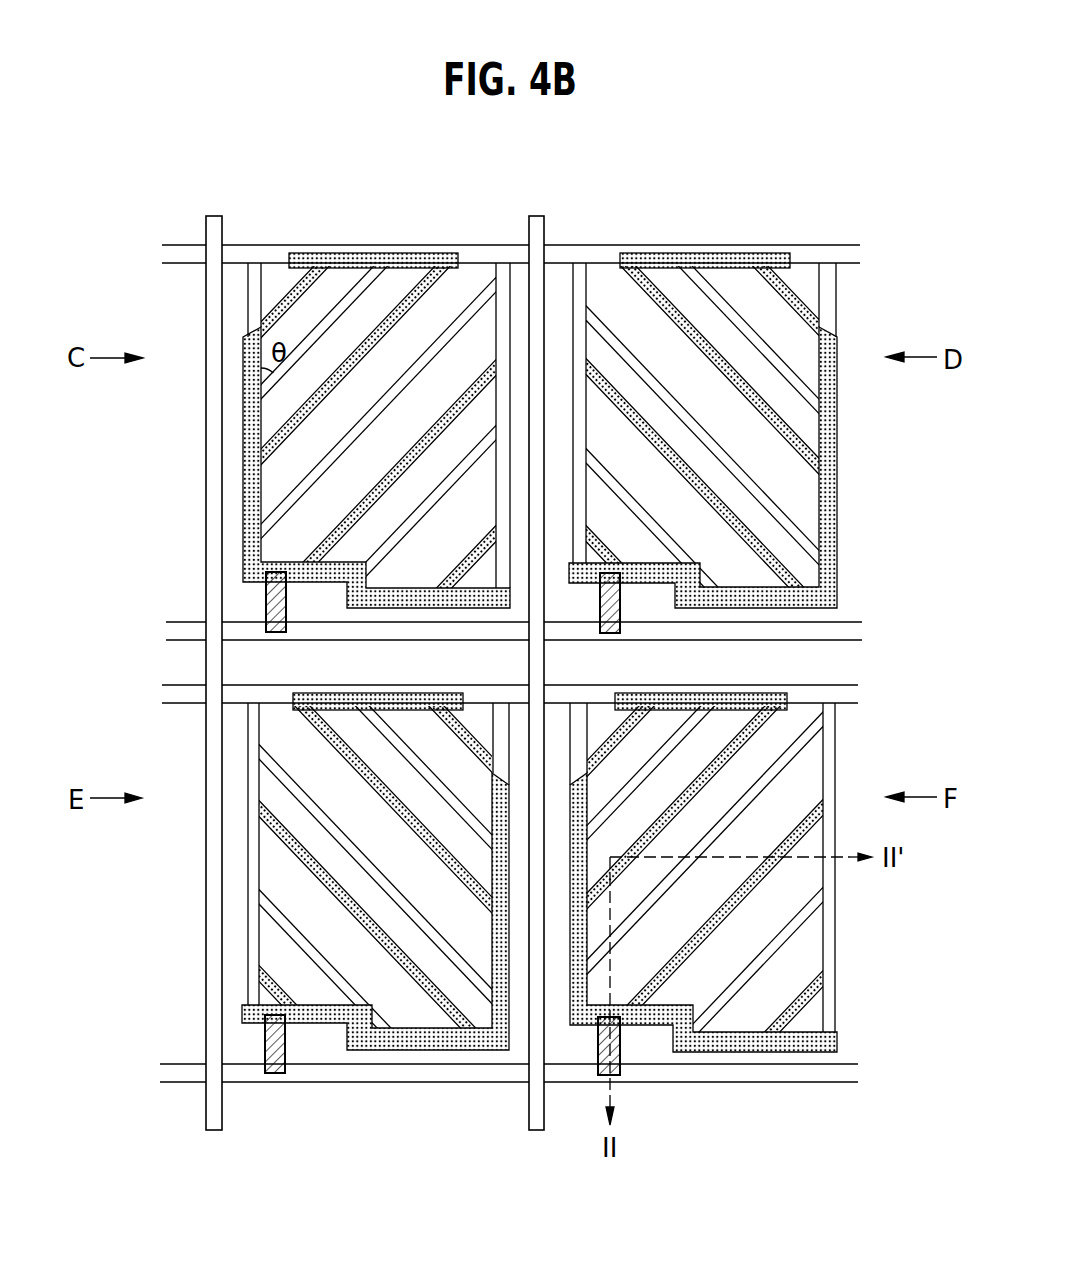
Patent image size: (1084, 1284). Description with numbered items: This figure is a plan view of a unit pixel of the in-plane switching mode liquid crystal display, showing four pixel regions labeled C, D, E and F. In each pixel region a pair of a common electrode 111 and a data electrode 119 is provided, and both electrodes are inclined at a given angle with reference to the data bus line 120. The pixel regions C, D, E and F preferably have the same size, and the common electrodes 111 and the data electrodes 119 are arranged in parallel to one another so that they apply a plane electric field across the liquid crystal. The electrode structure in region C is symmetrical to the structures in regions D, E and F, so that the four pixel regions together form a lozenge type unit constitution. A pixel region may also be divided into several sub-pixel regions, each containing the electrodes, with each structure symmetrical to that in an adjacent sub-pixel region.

The common electrode 111 is at (298, 490).
The data electrode 119 is at (280, 302).
The data bus line 120 is at (213, 661).